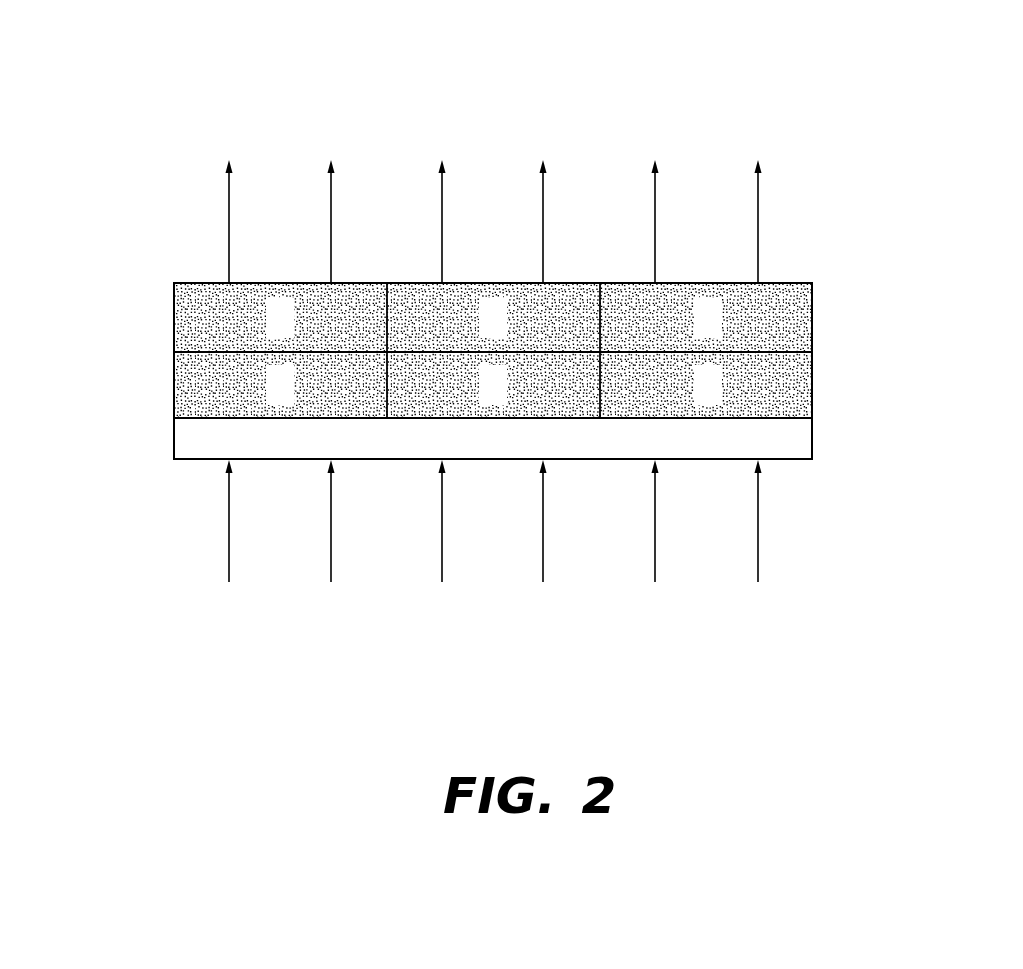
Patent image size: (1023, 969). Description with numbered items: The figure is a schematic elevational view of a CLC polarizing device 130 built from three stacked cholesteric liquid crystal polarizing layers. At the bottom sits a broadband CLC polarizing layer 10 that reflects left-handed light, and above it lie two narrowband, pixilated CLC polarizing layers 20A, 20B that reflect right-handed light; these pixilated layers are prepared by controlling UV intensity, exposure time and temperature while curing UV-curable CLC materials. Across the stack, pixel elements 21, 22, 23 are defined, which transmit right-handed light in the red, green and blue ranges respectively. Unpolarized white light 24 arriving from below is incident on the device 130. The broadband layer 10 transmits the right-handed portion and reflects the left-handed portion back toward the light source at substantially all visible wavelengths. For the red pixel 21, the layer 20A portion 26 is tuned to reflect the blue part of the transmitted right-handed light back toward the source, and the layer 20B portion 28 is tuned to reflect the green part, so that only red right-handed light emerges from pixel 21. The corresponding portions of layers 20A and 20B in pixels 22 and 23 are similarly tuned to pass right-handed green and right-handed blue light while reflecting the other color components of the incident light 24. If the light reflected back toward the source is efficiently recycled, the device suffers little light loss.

The CLC polarizing device 130 is at (910, 118).
The narrowband pixilated CLC polarizing layer 20B is at (834, 317).
The narrowband pixilated CLC polarizing layer 20A is at (834, 385).
The layer 20B portion of pixel 21 28 is at (174, 318).
The layer 20A portion of pixel 21 26 is at (174, 386).
The broadband CLC polarizing layer 10 is at (813, 436).
The pixel element 21 is at (274, 266).
The pixel element 22 is at (487, 266).
The pixel element 23 is at (701, 265).
The unpolarized white light 24 is at (227, 553).